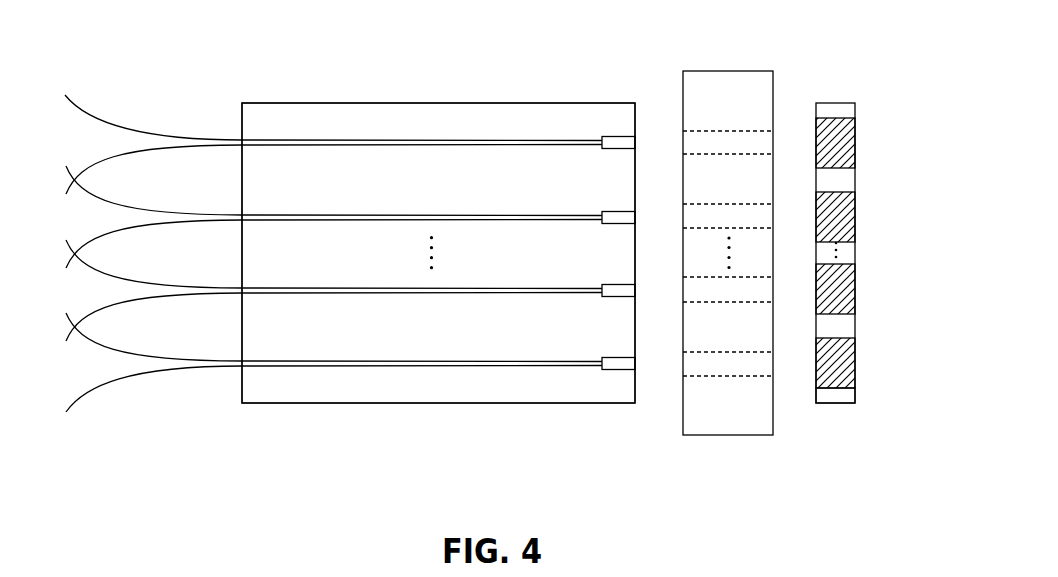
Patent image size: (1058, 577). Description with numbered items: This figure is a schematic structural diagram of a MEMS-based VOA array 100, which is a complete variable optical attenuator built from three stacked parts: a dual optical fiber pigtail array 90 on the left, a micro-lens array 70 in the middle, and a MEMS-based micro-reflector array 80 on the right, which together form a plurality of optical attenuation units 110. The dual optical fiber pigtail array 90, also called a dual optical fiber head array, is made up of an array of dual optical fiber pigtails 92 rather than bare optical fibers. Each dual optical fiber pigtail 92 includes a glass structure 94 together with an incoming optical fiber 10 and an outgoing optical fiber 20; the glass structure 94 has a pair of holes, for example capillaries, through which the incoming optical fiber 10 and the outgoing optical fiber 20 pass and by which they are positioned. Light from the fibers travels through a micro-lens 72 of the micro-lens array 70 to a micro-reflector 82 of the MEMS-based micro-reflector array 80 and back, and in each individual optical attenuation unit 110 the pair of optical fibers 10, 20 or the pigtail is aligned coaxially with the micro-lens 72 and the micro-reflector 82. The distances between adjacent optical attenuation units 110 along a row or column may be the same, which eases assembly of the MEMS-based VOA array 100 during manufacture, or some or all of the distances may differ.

The incoming optical fiber 10 is at (103, 120).
The outgoing optical fiber 20 is at (117, 383).
The MEMS-based VOA array 100 is at (351, 54).
The dual optical fiber pigtail array 90 is at (497, 122).
The dual optical fiber pigtail 92 is at (638, 365).
The glass structure 94 is at (605, 366).
The micro-lens array 70 is at (740, 416).
The micro-lens 72 is at (732, 367).
The MEMS-based micro-reflector array 80 is at (835, 102).
The micro-reflector 82 is at (825, 391).
The optical attenuation unit 110 is at (858, 103).